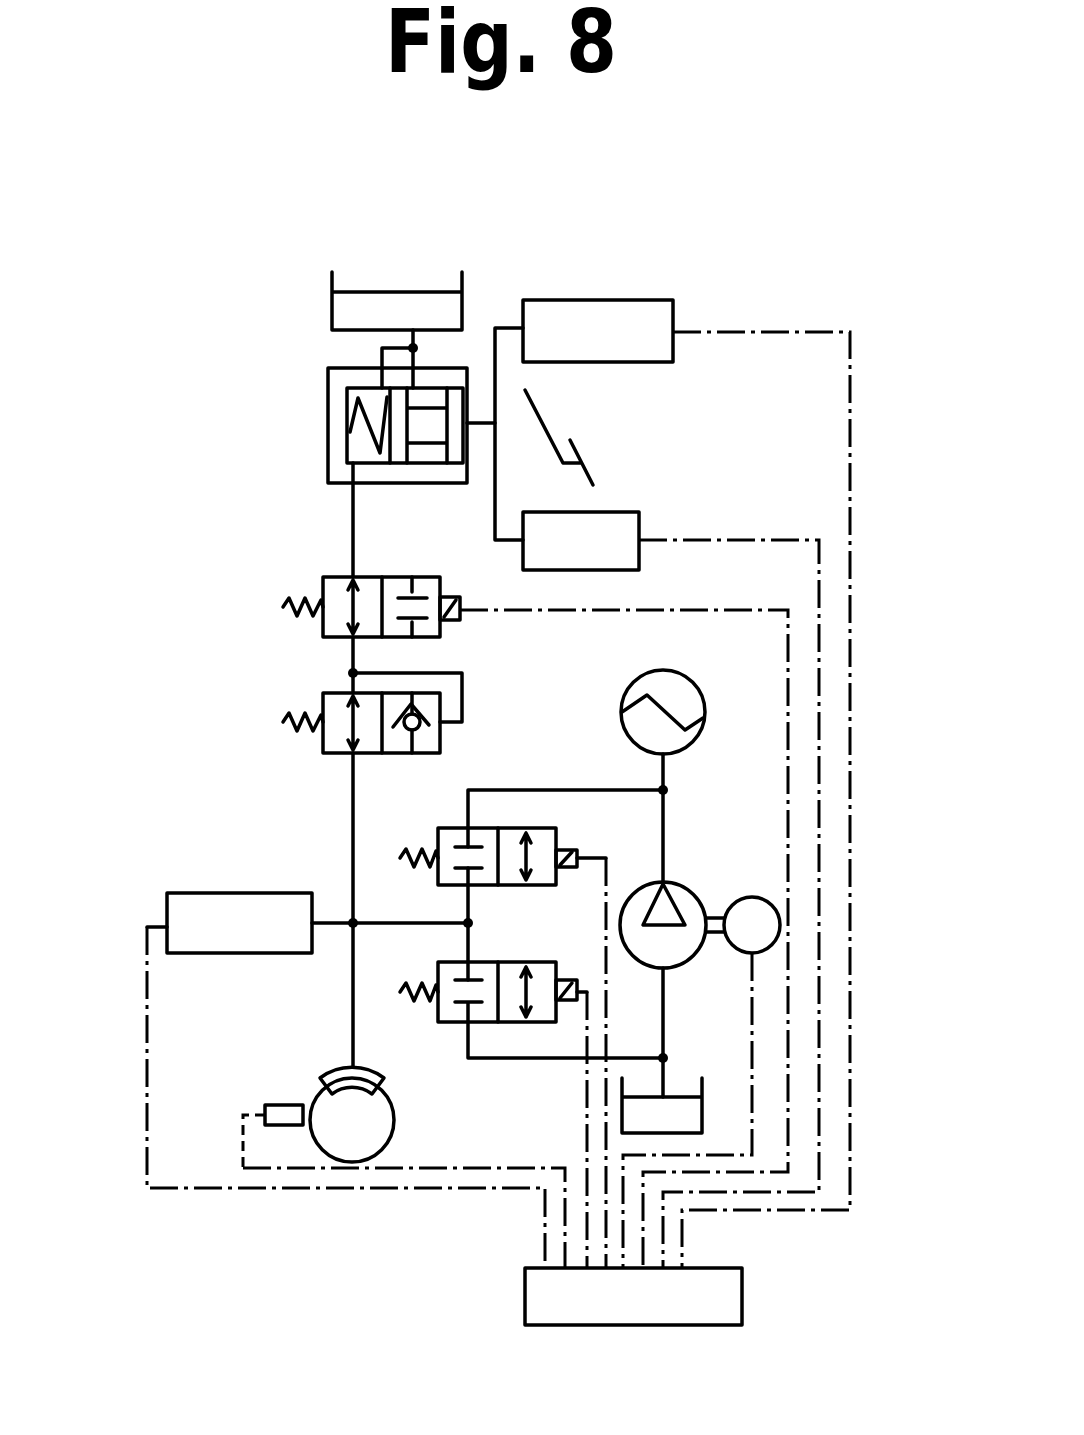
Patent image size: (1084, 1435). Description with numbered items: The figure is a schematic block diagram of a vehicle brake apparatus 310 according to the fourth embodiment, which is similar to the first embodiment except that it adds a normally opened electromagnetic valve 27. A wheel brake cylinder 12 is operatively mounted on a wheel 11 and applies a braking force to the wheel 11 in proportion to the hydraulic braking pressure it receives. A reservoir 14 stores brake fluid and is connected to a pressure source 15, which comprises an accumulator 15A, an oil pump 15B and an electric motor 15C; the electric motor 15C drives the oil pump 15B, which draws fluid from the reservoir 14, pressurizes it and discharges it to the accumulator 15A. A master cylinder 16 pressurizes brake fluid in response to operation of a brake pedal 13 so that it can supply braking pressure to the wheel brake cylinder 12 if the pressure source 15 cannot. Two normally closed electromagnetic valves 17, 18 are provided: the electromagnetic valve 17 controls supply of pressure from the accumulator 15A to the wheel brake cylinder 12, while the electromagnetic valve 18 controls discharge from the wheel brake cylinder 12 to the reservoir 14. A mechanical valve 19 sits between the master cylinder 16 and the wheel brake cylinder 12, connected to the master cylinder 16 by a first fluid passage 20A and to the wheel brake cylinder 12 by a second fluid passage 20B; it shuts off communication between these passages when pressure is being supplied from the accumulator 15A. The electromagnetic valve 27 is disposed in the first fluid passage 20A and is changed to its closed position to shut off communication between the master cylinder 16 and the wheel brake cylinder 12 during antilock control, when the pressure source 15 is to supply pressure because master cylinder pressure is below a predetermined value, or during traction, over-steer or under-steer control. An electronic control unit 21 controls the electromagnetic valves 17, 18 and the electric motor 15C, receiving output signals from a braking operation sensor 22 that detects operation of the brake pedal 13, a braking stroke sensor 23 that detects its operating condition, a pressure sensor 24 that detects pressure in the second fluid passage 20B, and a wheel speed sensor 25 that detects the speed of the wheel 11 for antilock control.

The wheel 11 is at (382, 1064).
The wheel brake cylinder 12 is at (330, 1075).
The brake pedal 13 is at (548, 438).
The reservoir 14 is at (332, 308).
The pressure source 15 is at (729, 959).
The accumulator 15A is at (705, 700).
The oil pump 15B is at (690, 885).
The electric motor 15C is at (760, 897).
The master cylinder 16 is at (320, 422).
The electromagnetic valve 17 is at (556, 835).
The electromagnetic valve 18 is at (508, 962).
The mechanical valve 19 is at (323, 702).
The first fluid passage 20A is at (352, 520).
The second fluid passage 20B is at (353, 808).
The electronic control unit 21 is at (742, 1297).
The braking operation sensor 22 is at (673, 310).
The braking stroke sensor 23 is at (639, 512).
The pressure sensor 24 is at (208, 893).
The wheel speed sensor 25 is at (275, 1105).
The electromagnetic valve 27 is at (323, 590).
The vehicle brake apparatus 310 is at (672, 719).